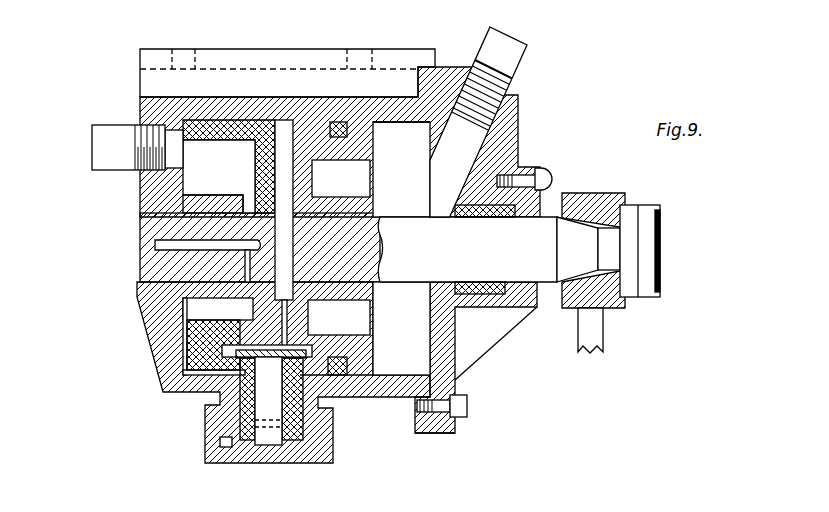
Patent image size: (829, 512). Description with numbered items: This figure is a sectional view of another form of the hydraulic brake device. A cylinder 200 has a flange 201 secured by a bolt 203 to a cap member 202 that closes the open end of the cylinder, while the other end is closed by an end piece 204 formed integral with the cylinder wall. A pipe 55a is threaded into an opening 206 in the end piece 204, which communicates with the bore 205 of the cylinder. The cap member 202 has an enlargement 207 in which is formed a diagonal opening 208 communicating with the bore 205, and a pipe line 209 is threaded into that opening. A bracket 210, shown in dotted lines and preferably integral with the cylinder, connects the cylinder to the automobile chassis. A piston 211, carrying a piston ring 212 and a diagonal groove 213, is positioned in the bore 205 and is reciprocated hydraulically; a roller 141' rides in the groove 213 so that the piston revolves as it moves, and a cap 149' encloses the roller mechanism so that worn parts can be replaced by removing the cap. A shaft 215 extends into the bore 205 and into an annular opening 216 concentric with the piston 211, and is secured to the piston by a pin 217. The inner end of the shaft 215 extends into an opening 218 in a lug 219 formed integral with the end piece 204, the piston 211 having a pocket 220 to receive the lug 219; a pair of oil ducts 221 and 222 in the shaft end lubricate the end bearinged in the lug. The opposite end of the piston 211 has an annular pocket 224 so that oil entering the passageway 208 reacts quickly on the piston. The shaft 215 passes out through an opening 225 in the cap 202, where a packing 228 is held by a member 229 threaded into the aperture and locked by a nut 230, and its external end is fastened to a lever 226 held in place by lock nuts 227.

The pipe 55a is at (92, 143).
The roller 141' is at (283, 372).
The cap 149' is at (247, 427).
The cylinder 200 is at (395, 402).
The flange 201 is at (430, 434).
The cap member 202 is at (462, 384).
The bolt 203 is at (470, 405).
The end piece 204 is at (142, 186).
The bore 205 is at (388, 133).
The opening 206 is at (176, 136).
The enlargement 207 is at (472, 126).
The diagonal opening 208 is at (519, 112).
The pipe line 209 is at (512, 50).
The bracket 210 is at (320, 56).
The piston 211 is at (200, 328).
The piston ring 212 is at (352, 379).
The diagonal groove 213 is at (240, 360).
The shaft 215 is at (402, 272).
The annular opening 216 is at (355, 215).
The pin 217 is at (286, 128).
The opening 218 is at (168, 220).
The lug 219 is at (208, 200).
The pocket 220 is at (213, 128).
The oil duct 221 is at (168, 245).
The oil duct 222 is at (247, 266).
The annular pocket 224 is at (340, 165).
The opening 225 is at (446, 221).
The lever 226 is at (598, 336).
The lock nuts 227 is at (652, 288).
The packing 228 is at (516, 171).
The member 229 is at (541, 206).
The nut 230 is at (518, 166).